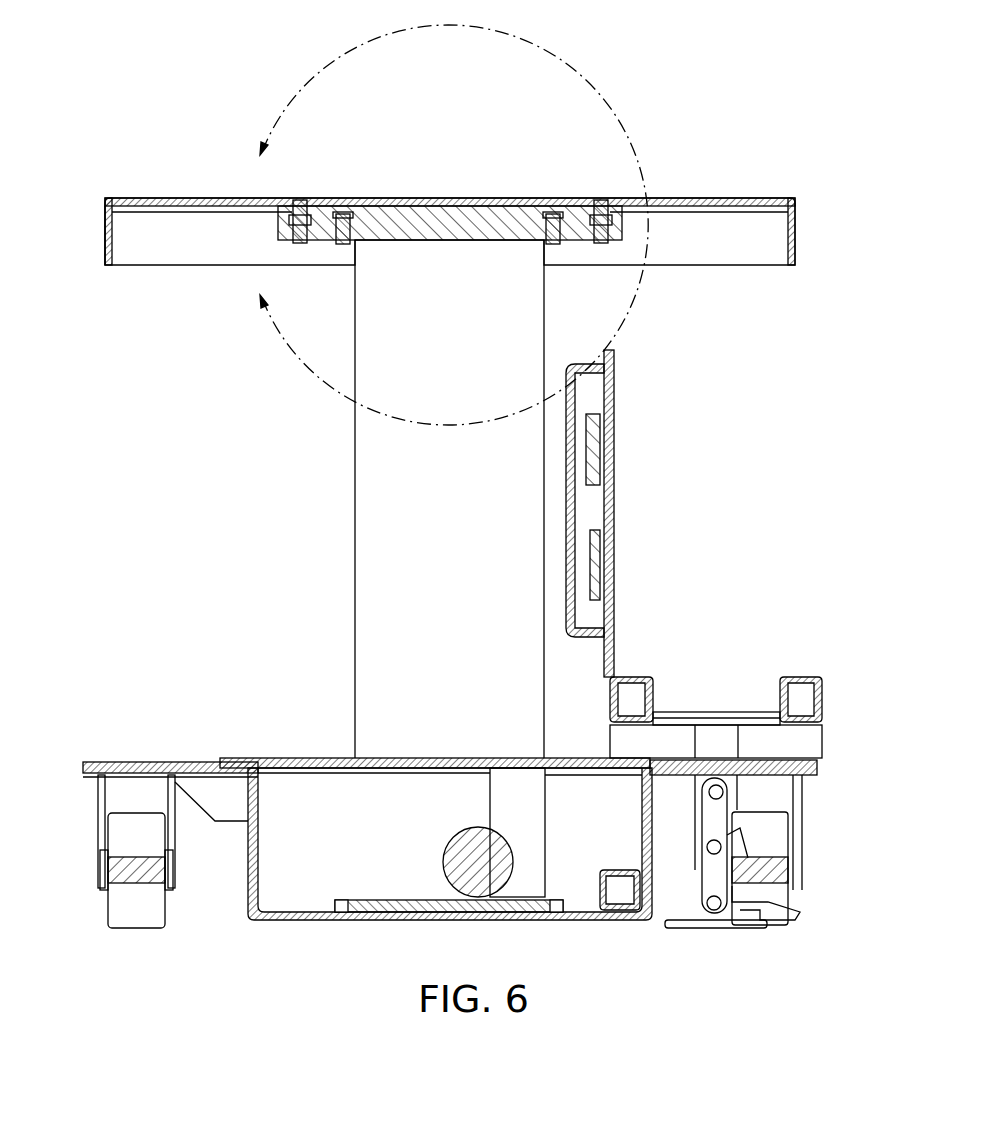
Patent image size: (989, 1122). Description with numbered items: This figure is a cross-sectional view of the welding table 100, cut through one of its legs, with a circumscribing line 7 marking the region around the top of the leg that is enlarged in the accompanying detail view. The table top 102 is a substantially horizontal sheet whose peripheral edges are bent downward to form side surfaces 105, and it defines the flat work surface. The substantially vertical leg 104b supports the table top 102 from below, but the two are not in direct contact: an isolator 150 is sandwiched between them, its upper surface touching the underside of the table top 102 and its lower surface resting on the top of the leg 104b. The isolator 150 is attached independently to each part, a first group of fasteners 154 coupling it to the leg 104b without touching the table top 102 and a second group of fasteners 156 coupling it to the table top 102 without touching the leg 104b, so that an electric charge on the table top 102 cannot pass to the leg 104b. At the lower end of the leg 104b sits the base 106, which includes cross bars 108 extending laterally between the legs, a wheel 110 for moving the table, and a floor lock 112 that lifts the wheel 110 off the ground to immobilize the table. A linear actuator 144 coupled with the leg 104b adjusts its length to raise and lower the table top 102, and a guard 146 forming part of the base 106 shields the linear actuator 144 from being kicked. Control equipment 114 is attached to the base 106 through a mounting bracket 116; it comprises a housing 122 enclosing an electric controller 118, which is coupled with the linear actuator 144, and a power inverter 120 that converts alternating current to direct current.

The welding table 100 is at (244, 52).
The line 7- 7 is at (444, 225).
The table top 102 is at (430, 198).
The side surfaces 105 is at (104, 250).
The isolator 150 is at (473, 214).
The second group of fasteners 156 is at (293, 222).
The first group of fasteners 154 is at (346, 246).
The leg 104b is at (372, 336).
The mounting bracket 116 is at (614, 648).
The control equipment 114 is at (558, 509).
The housing 122 is at (568, 603).
The power inverter 120 is at (586, 442).
The electric controller 118 is at (590, 566).
The cross bar 108 is at (655, 695).
The base 106 is at (267, 736).
The guard 146 is at (249, 838).
The linear actuator 144 is at (445, 850).
The wheel 110 is at (133, 918).
The floor lock 112 is at (700, 922).